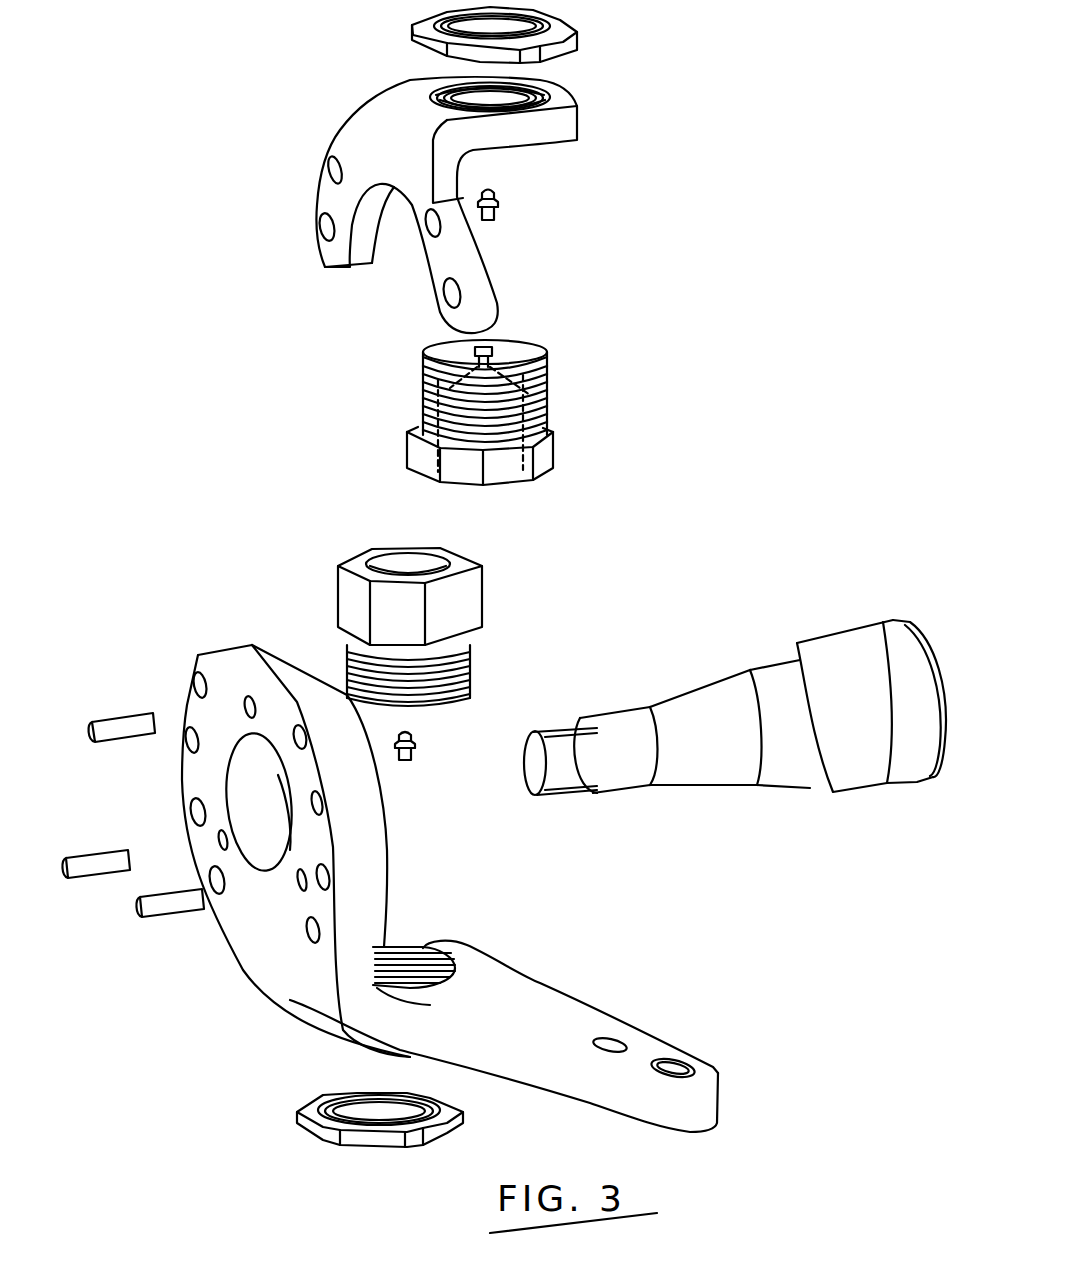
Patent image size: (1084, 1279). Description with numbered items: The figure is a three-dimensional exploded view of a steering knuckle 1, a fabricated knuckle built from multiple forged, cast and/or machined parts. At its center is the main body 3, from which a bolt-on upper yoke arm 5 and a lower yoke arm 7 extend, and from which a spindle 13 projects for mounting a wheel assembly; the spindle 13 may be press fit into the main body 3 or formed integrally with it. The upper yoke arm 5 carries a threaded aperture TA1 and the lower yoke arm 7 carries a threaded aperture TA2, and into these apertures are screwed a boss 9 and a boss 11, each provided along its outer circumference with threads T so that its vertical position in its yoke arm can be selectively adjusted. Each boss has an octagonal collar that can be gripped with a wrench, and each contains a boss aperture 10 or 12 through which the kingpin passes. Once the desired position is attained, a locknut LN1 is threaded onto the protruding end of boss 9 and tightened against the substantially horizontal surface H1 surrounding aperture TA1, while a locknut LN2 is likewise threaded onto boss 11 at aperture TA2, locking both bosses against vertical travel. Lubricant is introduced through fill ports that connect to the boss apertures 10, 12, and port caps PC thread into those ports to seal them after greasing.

The steering knuckle 1 is at (700, 420).
The main body 3 is at (360, 889).
The upper yoke arm 5 is at (533, 137).
The lower yoke arm 7 is at (577, 1027).
The boss 9 is at (508, 472).
The boss aperture 10 is at (457, 450).
The boss 11 is at (452, 618).
The boss aperture 12 is at (425, 568).
The spindle 13 is at (723, 763).
The threads T is at (545, 397).
The port cap PC is at (496, 216).
The locknut LN1 is at (567, 50).
The locknut LN2 is at (450, 1130).
The threaded aperture TA1 is at (570, 102).
The threaded aperture TA2 is at (423, 947).
The substantially horizontal surface H1 is at (540, 80).